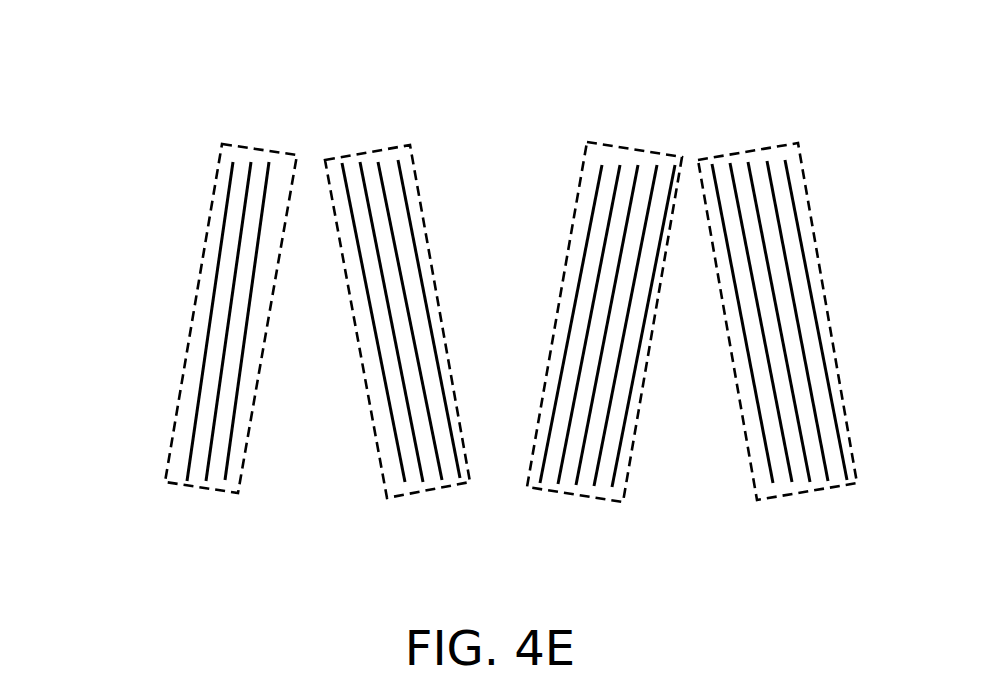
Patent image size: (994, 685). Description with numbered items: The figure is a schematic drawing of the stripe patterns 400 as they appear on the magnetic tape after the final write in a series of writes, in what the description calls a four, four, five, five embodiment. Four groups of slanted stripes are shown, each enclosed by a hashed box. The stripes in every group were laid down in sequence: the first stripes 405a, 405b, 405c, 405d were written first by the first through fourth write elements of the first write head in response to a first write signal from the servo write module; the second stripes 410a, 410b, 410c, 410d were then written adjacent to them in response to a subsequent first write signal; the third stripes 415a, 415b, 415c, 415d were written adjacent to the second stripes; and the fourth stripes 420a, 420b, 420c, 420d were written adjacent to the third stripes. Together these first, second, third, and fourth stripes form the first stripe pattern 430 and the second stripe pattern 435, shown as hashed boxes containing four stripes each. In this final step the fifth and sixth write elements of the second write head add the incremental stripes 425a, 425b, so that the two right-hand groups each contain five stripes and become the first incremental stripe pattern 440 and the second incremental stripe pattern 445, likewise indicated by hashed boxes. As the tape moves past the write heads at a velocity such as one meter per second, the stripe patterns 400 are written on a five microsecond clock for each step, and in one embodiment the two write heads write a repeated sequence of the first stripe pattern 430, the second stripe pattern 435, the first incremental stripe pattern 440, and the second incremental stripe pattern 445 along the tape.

The stripe patterns 400 is at (88, 88).
The first stripe 405a is at (848, 478).
The first stripe 405b is at (675, 165).
The first stripe 405c is at (398, 162).
The first stripe 405d is at (232, 462).
The second stripe 410a is at (768, 168).
The second stripe 410b is at (592, 470).
The second stripe 410c is at (440, 472).
The second stripe 410d is at (269, 161).
The third stripe 415a is at (810, 472).
The third stripe 415b is at (637, 165).
The third stripe 415c is at (361, 165).
The third stripe 415d is at (190, 465).
The fourth stripe 420a is at (732, 170).
The fourth stripe 420b is at (554, 474).
The fourth stripe 420c is at (405, 480).
The fourth stripe 420d is at (233, 161).
The incremental stripe 425a is at (773, 476).
The incremental stripe 425b is at (602, 162).
The first stripe pattern 430 is at (443, 328).
The second stripe pattern 435 is at (256, 390).
The first incremental stripe pattern 440 is at (748, 443).
The second incremental stripe pattern 445 is at (648, 348).